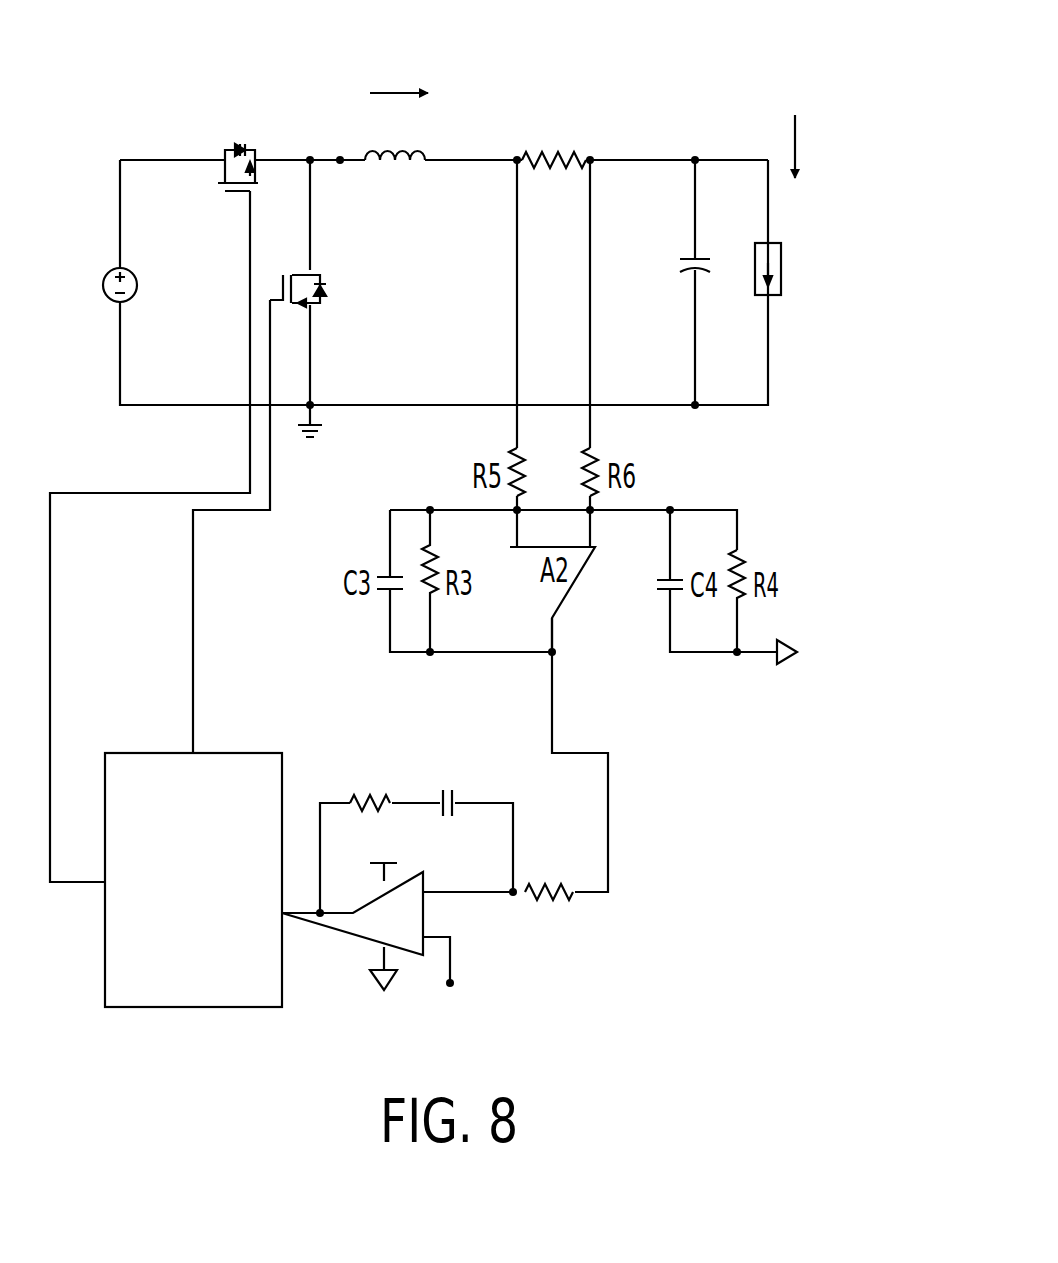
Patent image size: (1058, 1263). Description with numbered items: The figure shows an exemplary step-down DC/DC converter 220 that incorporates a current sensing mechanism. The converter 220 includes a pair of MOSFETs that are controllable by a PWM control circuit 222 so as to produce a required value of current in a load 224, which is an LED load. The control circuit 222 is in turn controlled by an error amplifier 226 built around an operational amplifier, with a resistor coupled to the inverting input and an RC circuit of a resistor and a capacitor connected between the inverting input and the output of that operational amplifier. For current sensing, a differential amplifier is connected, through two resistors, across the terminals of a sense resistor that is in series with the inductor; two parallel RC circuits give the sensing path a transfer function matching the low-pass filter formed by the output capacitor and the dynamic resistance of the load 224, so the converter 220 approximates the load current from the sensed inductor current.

The step-down DC/DC converter 220 is at (128, 96).
The PWM control circuit 222 is at (212, 933).
The load 224 is at (782, 268).
The error amplifier 226 is at (500, 935).